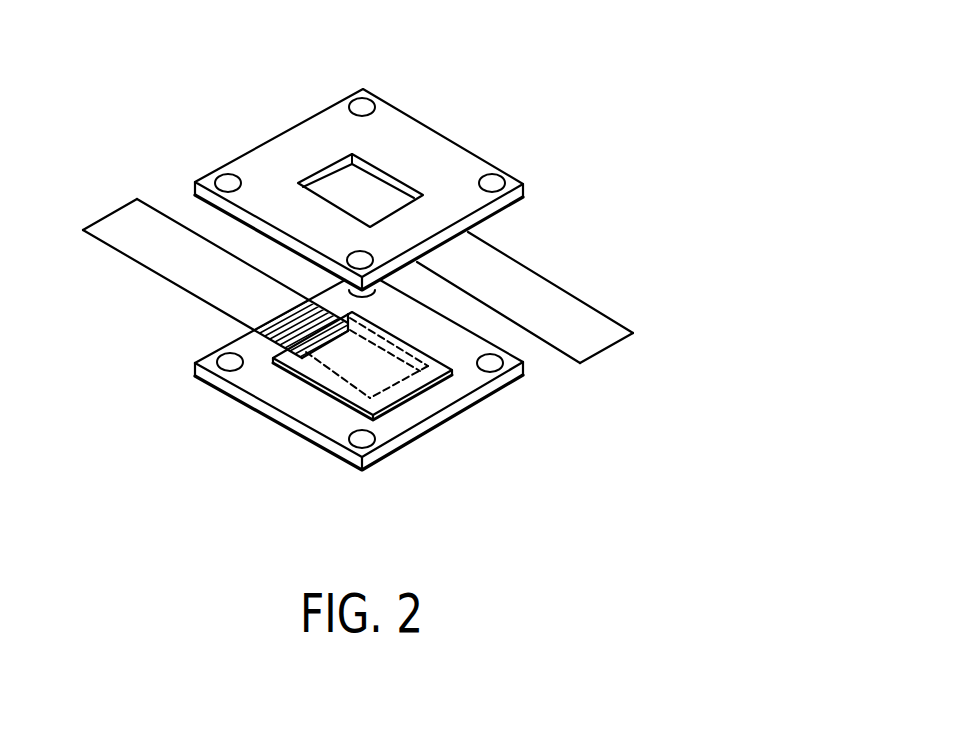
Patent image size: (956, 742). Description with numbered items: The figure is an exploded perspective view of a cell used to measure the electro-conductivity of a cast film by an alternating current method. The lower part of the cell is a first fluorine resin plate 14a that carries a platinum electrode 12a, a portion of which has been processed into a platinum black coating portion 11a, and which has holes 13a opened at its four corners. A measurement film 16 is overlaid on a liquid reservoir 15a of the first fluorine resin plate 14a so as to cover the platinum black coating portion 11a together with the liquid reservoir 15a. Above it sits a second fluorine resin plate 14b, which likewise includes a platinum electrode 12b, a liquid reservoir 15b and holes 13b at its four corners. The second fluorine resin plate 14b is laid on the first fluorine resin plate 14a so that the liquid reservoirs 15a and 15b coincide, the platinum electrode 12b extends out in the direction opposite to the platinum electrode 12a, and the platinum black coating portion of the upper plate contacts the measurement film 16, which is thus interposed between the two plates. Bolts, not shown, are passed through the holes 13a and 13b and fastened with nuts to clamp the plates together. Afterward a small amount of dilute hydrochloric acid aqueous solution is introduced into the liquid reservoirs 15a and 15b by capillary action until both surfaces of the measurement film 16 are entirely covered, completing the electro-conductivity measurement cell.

The platinum black coating portion 11a is at (282, 336).
The platinum electrode 12a is at (135, 243).
The platinum electrode 12b is at (560, 314).
The holes 13a is at (230, 363).
The holes 13b is at (362, 108).
The first fluorine resin plate 14a is at (331, 475).
The second fluorine resin plate 14b is at (474, 137).
The liquid reservoir 15a is at (337, 370).
The liquid reservoir 15b is at (365, 187).
The measurement film 16 is at (425, 390).